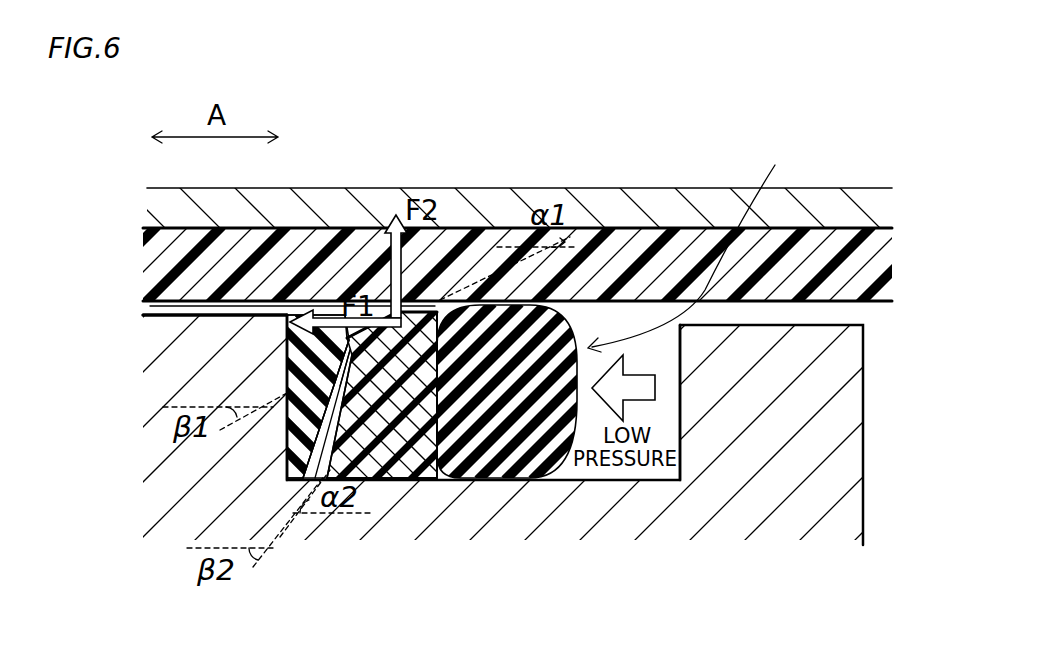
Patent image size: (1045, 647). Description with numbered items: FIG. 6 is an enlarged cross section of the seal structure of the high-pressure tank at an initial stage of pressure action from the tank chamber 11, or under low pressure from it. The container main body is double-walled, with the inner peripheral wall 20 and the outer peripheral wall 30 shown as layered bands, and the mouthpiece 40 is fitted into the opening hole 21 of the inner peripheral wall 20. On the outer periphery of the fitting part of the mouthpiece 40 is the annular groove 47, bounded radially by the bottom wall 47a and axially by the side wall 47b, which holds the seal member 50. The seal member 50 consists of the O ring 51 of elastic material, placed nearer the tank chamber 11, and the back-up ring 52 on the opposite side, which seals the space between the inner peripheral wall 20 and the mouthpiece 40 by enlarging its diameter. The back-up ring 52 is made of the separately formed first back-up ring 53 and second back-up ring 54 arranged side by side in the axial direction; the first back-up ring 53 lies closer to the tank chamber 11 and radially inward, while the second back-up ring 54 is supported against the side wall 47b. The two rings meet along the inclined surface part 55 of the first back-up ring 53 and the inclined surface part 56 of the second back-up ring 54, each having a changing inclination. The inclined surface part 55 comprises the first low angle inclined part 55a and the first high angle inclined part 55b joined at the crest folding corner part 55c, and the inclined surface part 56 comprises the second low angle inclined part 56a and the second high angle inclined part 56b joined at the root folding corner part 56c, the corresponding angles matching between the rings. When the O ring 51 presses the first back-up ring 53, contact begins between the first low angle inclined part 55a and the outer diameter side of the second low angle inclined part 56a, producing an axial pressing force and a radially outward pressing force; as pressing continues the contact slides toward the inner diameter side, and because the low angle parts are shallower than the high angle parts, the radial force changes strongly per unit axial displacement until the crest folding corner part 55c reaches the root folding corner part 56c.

The tank chamber 11 is at (907, 385).
The inner peripheral wall 20 is at (820, 257).
The opening hole 21 is at (150, 306).
The outer peripheral wall 30 is at (818, 208).
The mouthpiece 40 is at (205, 480).
The groove 47 is at (622, 481).
The bottom wall 47a is at (680, 475).
The side wall 47b is at (287, 395).
The seal member 50 is at (692, 243).
The O ring 51 is at (583, 318).
The back-up ring 52 is at (512, 138).
The first back-up ring 53 is at (443, 318).
The second back-up ring 54 is at (300, 330).
The inclined surface part 55 is at (535, 585).
The first low angle inclined part 55a is at (430, 470).
The first high angle inclined part 55b is at (383, 470).
The crest folding corner part 55c is at (398, 380).
The inclined surface part 56 is at (93, 307).
The second low angle inclined part 56a is at (347, 338).
The second high angle inclined part 56b is at (352, 378).
The root folding corner part 56c is at (350, 356).